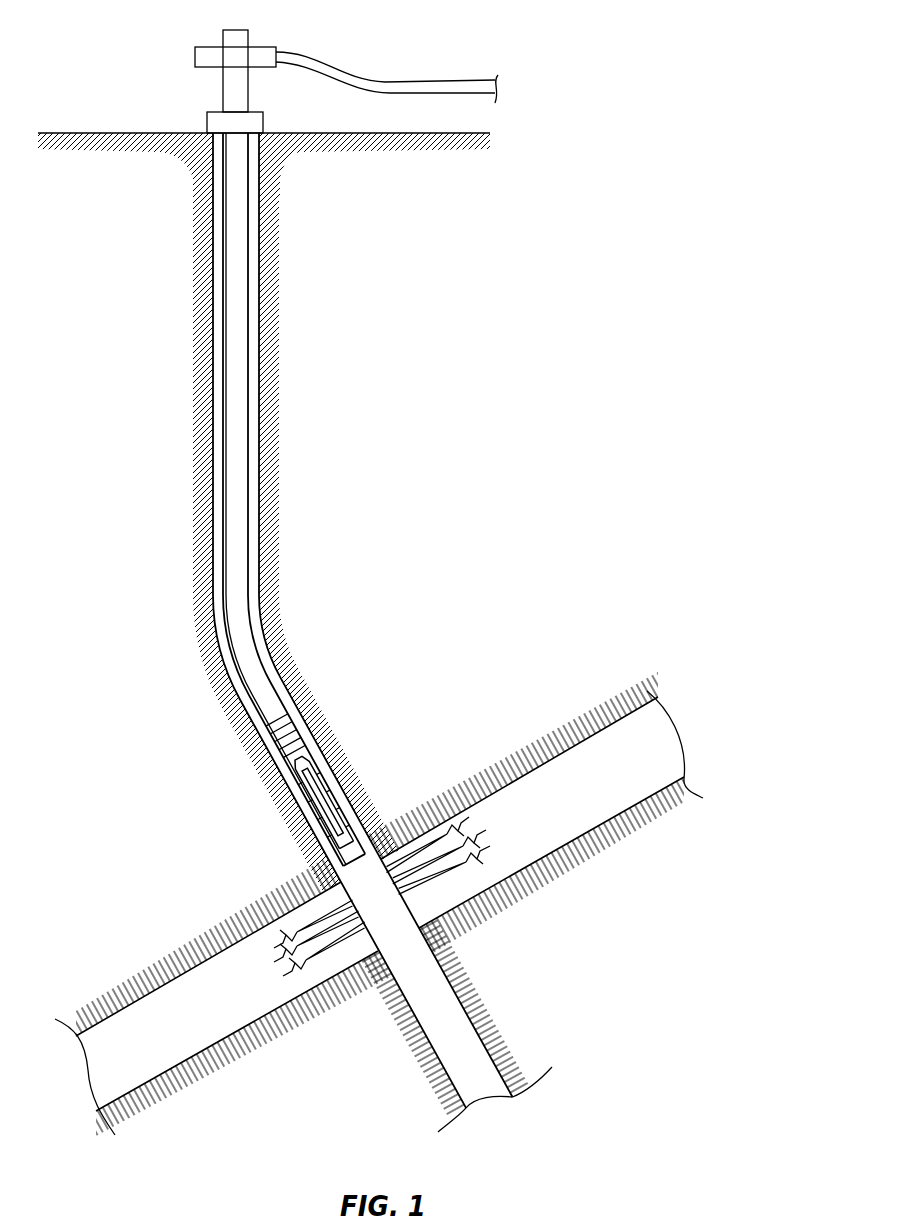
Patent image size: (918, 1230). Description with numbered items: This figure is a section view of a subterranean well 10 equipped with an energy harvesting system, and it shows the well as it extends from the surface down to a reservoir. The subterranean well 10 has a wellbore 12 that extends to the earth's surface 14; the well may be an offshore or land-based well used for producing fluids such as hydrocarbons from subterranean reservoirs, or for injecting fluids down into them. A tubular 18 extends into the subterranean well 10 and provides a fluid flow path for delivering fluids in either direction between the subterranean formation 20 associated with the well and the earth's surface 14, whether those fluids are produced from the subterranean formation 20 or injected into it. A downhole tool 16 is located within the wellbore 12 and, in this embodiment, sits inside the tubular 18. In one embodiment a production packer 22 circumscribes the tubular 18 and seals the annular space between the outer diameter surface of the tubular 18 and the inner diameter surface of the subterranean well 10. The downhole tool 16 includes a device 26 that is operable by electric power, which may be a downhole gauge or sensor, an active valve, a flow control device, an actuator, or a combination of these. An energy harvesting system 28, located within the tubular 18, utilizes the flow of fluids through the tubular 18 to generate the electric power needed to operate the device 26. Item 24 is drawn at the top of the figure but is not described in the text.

The subterranean well 10 is at (166, 389).
The wellbore 12 is at (260, 489).
The earth's surface 14 is at (150, 133).
The downhole tool 16 is at (272, 748).
The tubular 18 is at (238, 283).
The subterranean formation 20 is at (580, 815).
The production packer 22 is at (355, 829).
The wellhead 24 is at (237, 29).
The device 26 is at (330, 802).
The energy harvesting system 28 is at (310, 821).